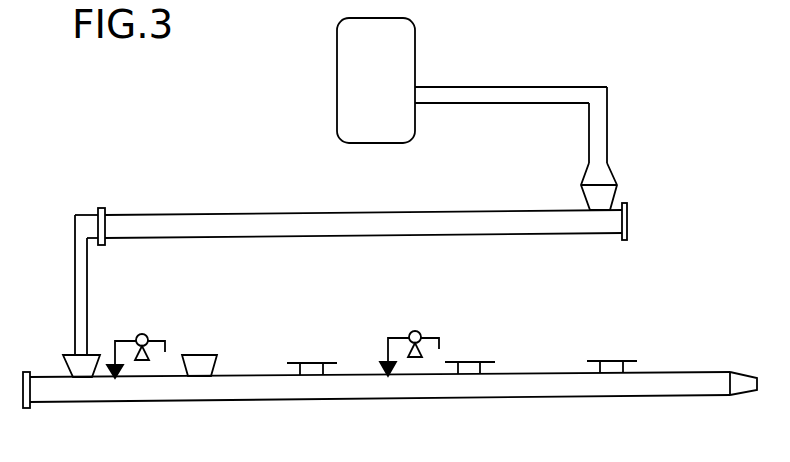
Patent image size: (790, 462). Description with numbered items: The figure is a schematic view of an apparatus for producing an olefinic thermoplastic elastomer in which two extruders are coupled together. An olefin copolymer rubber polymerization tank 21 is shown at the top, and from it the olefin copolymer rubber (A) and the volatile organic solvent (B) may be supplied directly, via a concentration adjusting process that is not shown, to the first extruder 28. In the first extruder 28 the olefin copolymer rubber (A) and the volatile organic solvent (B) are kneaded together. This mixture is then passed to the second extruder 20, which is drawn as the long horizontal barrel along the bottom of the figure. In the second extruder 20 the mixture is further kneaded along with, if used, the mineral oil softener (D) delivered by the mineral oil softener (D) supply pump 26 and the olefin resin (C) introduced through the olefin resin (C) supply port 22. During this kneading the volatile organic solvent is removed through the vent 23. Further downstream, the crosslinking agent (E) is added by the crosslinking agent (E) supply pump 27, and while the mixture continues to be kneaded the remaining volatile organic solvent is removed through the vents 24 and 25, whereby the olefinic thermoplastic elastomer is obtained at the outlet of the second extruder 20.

The second extruder 20 is at (262, 387).
The olefin copolymer rubber polymerization tank 21 is at (389, 125).
The olefin resin (C) supply port 22 is at (202, 358).
The vent 23 is at (315, 363).
The vent 24 is at (468, 362).
The vent 25 is at (613, 365).
The mineral oil softener (D) supply pump 26 is at (142, 333).
The crosslinking agent (E) supply pump 27 is at (416, 329).
The first extruder 28 is at (292, 228).